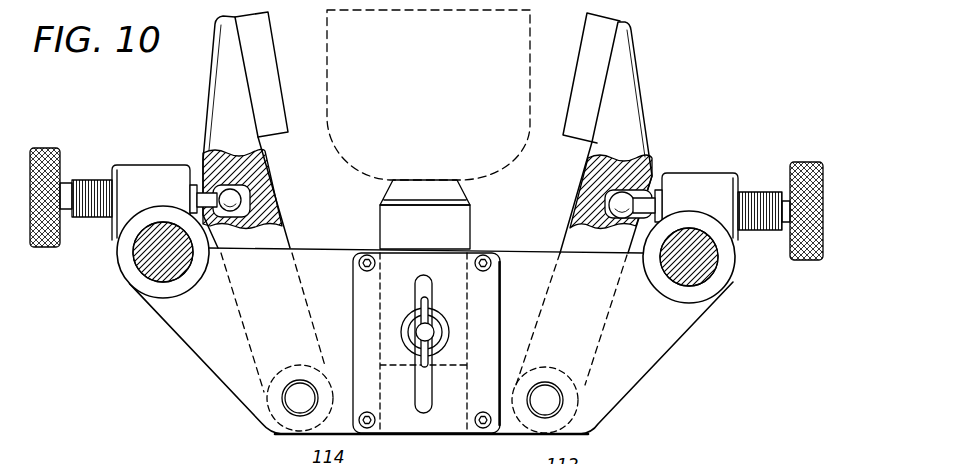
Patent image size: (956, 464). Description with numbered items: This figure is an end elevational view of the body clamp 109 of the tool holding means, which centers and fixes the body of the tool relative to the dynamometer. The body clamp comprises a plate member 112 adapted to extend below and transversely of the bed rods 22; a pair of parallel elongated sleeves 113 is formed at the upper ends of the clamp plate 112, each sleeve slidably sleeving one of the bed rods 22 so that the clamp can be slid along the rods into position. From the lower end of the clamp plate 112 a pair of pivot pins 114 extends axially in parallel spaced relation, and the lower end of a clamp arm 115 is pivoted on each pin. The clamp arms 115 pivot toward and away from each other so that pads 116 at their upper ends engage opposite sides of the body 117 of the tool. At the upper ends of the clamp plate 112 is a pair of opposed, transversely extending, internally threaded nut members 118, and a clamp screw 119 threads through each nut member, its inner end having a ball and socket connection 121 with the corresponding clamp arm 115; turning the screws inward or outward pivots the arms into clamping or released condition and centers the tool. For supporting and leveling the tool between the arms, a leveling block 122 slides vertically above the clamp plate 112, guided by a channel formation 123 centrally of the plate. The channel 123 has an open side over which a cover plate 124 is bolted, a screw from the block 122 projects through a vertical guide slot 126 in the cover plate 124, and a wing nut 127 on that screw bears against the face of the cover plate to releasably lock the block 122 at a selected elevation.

The bed rods 22 is at (150, 277).
The body clamp 109 is at (626, 403).
The plate member 112 is at (224, 341).
The sleeves 113 is at (125, 257).
The pivot pins 114 is at (287, 400).
The clamp arm 115 is at (210, 76).
The pads 116 is at (275, 56).
The body of the tool 117 is at (531, 67).
The nut members 118 is at (145, 180).
The clamp screw 119 is at (80, 180).
The ball and socket connection 121 is at (271, 181).
The leveling block 122 is at (413, 180).
The channel formation 123 is at (380, 398).
The cover plate 124 is at (537, 281).
The vertical guide slot 126 is at (425, 278).
The wing nut 127 is at (426, 332).